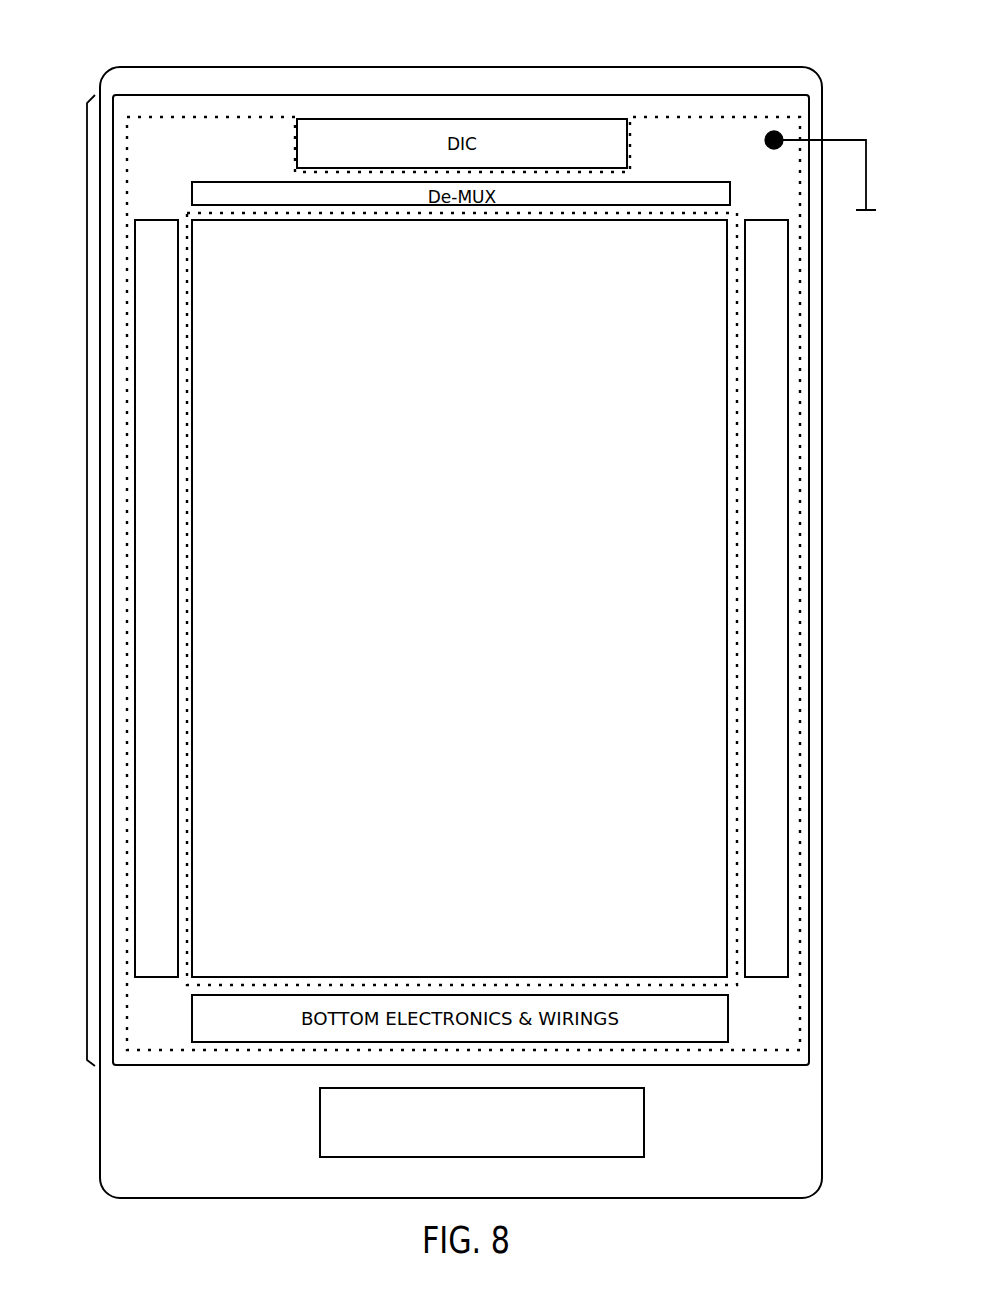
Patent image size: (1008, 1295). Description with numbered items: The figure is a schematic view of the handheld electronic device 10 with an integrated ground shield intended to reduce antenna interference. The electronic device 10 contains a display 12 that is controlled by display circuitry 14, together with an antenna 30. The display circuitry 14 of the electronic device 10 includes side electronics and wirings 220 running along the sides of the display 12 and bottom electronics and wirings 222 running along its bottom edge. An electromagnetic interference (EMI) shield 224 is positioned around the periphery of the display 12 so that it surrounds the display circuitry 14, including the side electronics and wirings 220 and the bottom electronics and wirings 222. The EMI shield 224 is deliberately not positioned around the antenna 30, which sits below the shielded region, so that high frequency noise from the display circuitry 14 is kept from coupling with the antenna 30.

The electronic device 10 is at (240, 18).
The display 12 is at (690, 117).
The display circuitry 14 is at (87, 580).
The antenna 30 is at (648, 1142).
The side electronics and wirings 220 is at (180, 365).
The bottom electronics and wirings 222 is at (513, 995).
The electromagnetic interference (EMI) shield 224 is at (200, 127).